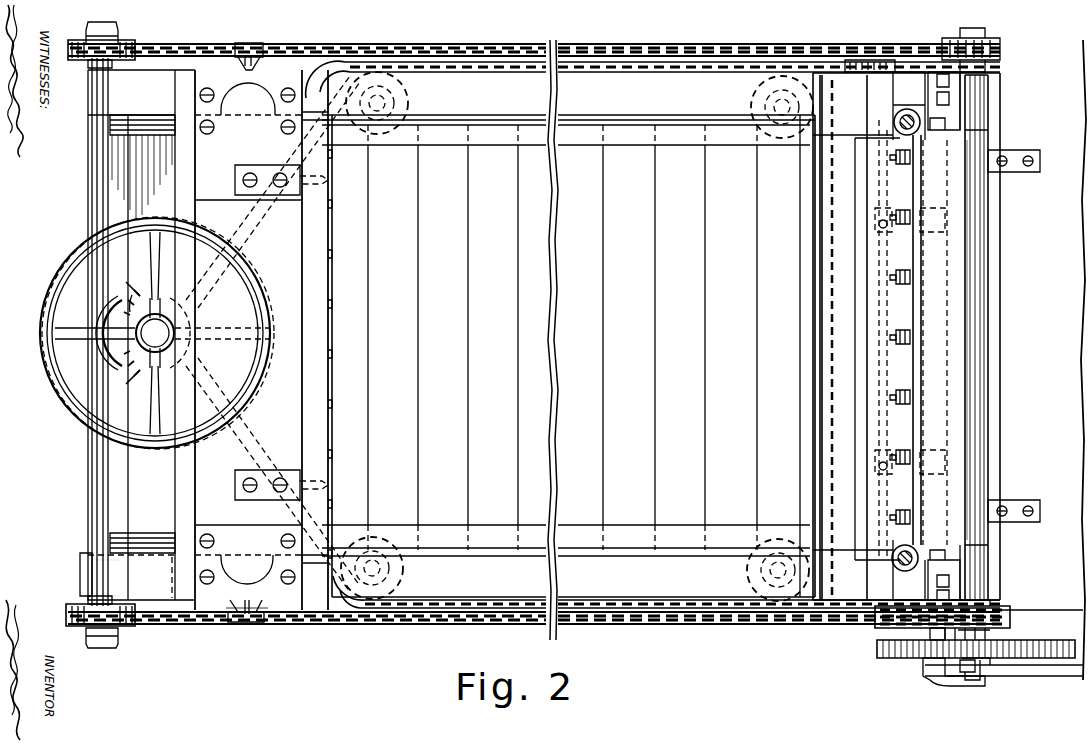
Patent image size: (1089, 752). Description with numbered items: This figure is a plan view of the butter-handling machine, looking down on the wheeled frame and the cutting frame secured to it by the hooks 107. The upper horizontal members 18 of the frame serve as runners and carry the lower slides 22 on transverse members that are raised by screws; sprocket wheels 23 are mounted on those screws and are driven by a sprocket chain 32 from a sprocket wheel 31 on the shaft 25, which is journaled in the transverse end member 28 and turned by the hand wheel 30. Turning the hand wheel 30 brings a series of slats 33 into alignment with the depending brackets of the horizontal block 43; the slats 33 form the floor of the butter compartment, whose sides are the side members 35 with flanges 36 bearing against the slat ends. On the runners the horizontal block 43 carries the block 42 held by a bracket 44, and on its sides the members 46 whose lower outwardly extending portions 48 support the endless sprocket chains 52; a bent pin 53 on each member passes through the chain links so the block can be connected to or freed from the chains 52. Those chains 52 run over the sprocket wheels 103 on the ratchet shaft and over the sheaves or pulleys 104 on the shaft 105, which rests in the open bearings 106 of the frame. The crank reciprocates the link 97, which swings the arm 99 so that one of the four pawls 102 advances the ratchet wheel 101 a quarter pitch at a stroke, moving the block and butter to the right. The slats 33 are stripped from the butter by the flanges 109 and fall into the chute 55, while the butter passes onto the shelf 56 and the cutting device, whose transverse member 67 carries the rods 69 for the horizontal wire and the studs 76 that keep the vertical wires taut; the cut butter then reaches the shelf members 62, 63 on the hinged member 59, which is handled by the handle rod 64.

The upper horizontal members 18 is at (375, 578).
The lower slides 22 is at (372, 568).
The sprocket wheels 23 is at (748, 576).
The shaft 25 is at (155, 333).
The transverse end member 28 is at (141, 335).
The hand wheel 30 is at (66, 404).
The sprocket wheel 31 is at (118, 356).
The sprocket chain 32 is at (134, 296).
The slats 33 is at (568, 356).
The side members 35 is at (437, 533).
The flanges 36 is at (472, 546).
The block 42 is at (263, 340).
The block 43 is at (268, 263).
The bracket 44 is at (292, 470).
The members 46 is at (248, 320).
The lower outwardly extending portion 48 is at (248, 626).
The endless sprocket chains 52 is at (342, 626).
The bent pin 53 is at (262, 622).
The chute 55 is at (948, 341).
The shelf 56 is at (886, 386).
The member 59 is at (996, 516).
The shelf member 62 is at (940, 336).
The shelf member 63 is at (984, 424).
The handle rod 64 is at (982, 318).
The transverse member 67 is at (918, 335).
The rods 69 is at (894, 566).
The studs 76 is at (892, 426).
The link 97 is at (1010, 670).
The arm 99 is at (932, 672).
The ratchet wheel 101 is at (1074, 650).
The pawls 102 is at (925, 664).
The sprocket wheels 103 is at (1010, 620).
The sheaves or pulleys 104 is at (76, 630).
The shaft 105 is at (93, 515).
The open bearings 106 is at (80, 580).
The hooks 107 is at (818, 610).
The flanges 109 is at (852, 148).